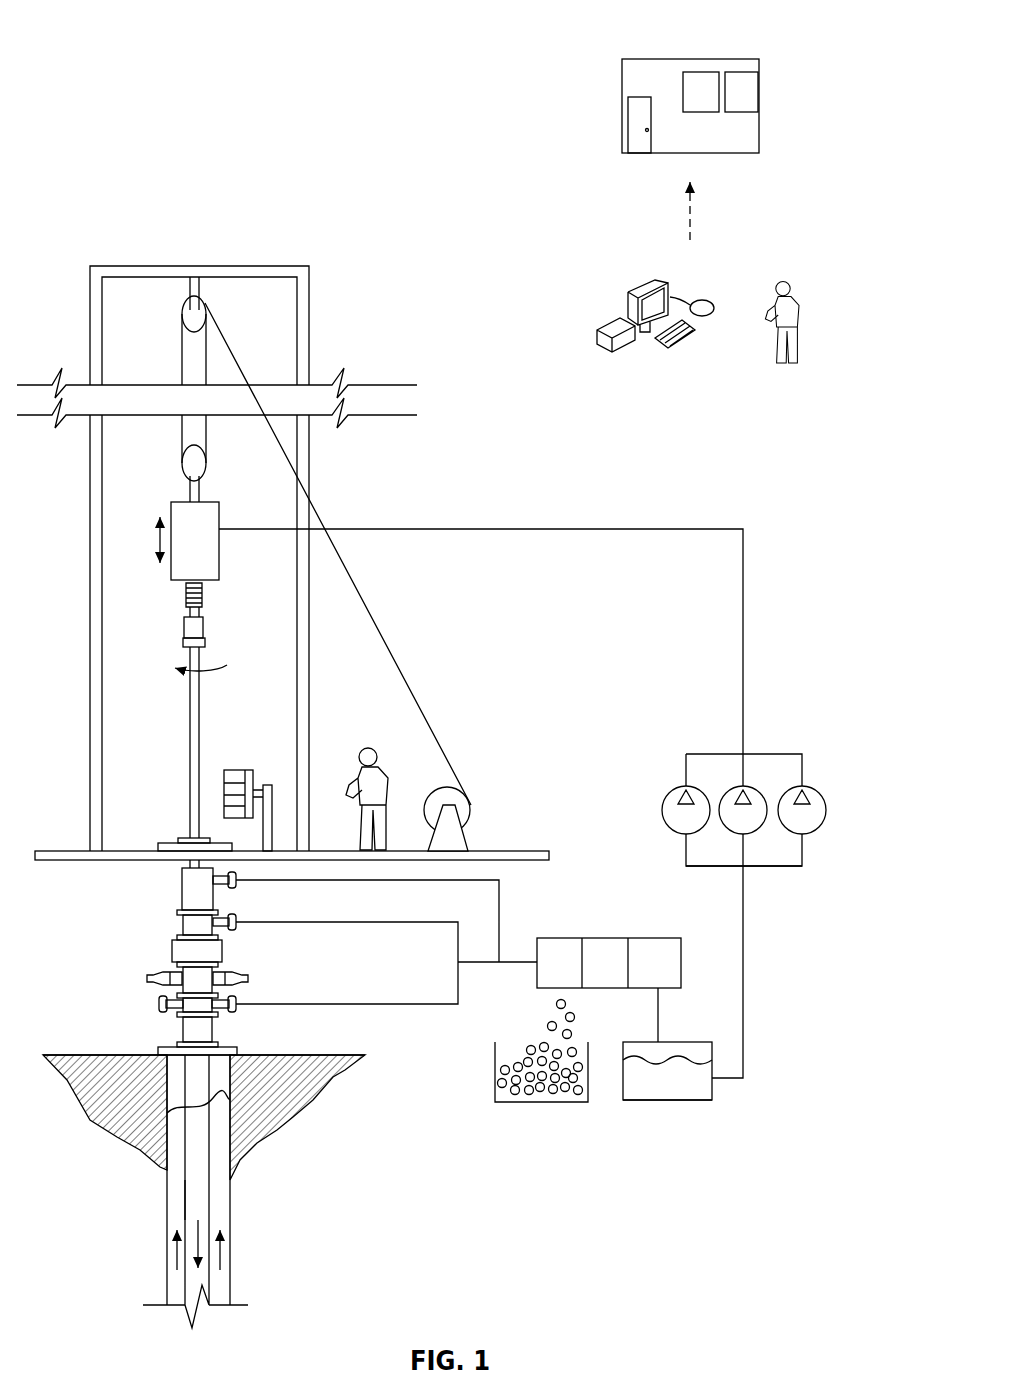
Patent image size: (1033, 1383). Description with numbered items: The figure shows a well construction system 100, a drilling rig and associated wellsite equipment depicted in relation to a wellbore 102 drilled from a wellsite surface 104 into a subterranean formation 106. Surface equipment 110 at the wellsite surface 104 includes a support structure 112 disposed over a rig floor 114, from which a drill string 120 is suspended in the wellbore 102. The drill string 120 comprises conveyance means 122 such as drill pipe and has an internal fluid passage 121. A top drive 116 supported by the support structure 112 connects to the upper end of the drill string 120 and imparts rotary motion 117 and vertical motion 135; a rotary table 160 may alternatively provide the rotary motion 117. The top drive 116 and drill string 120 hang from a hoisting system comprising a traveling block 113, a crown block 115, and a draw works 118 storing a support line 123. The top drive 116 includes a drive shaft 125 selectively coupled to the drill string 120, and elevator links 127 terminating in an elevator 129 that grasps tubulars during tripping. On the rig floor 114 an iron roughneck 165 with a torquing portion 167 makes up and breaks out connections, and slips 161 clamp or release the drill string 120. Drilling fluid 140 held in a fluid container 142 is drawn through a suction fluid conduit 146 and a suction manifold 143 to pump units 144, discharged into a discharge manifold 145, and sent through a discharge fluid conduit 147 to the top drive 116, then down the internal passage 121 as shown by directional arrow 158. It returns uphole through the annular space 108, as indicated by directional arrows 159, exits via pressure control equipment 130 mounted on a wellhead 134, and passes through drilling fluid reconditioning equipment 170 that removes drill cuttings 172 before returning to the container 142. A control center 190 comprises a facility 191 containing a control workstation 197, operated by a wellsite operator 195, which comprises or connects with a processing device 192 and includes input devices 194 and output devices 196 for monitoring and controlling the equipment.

The well construction system 100 is at (95, 33).
The wellbore 102 is at (233, 1164).
The wellsite surface 104 is at (285, 1055).
The subterranean formation 106 is at (145, 1111).
The annular space 108 is at (220, 1215).
The surface equipment 110 is at (730, 492).
The support structure 112 is at (310, 348).
The traveling block 113 is at (183, 465).
The rig floor 114 is at (520, 851).
The crown block 115 is at (183, 310).
The top drive 116 is at (220, 550).
The rotary motion 117 is at (165, 673).
The draw works 118 is at (470, 810).
The drill string 120 is at (188, 723).
The internal fluid passage 121 is at (185, 1200).
The conveyance means 122 is at (188, 772).
The support cable or line 123 is at (415, 702).
The drive shaft 125 is at (185, 585).
The elevator links 127 is at (203, 612).
The elevator 129 is at (184, 640).
The pressure control equipment 130 is at (170, 950).
The wellhead 134 is at (180, 1030).
The vertical motion 135 is at (158, 540).
The drilling fluid 140 is at (700, 1095).
The fluid container 142 is at (640, 1100).
The suction manifold 143 is at (780, 866).
The pump units 144 is at (663, 800).
The discharge manifold 145 is at (775, 754).
The suction fluid conduit 146 is at (743, 995).
The discharge fluid conduit 147 is at (743, 636).
The directional arrow 158 is at (212, 1262).
The directional arrows 159 is at (177, 1250).
The rotary table 160 is at (172, 845).
The slips 161 is at (186, 838).
The iron roughneck 165 is at (268, 785).
The torquing portion 167 is at (233, 770).
The drilling fluid reconditioning equipment 170 is at (605, 938).
The drill cuttings 172 is at (540, 1088).
The control center 190 is at (640, 35).
The facility 191 is at (695, 59).
The processing device 192 is at (597, 335).
The input devices 194 is at (703, 300).
The wellsite operator 195 is at (360, 748).
The output devices 196 is at (630, 296).
The control workstation 197 is at (665, 262).